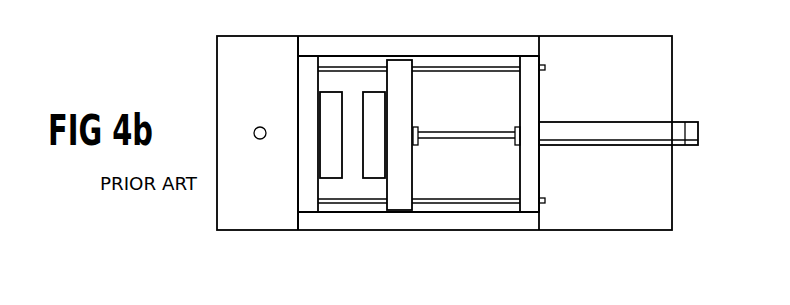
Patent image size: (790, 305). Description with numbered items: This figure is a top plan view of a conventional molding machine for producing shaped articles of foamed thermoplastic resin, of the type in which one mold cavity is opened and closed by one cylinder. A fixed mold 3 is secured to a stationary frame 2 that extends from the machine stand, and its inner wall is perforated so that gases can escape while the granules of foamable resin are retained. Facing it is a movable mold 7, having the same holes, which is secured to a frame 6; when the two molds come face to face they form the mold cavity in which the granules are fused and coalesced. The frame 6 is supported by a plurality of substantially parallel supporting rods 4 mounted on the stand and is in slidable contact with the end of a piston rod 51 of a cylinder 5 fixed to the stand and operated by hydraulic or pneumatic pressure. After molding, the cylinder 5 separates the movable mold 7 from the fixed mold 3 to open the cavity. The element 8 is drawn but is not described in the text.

The stationary frame 2 is at (310, 203).
The fixed mold 3 is at (328, 100).
The supporting rods 4 is at (500, 200).
The cylinder 5 is at (693, 128).
The frame 6 is at (398, 65).
The movable mold 7 is at (373, 100).
The guide frame 8 is at (393, 224).
The piston rod 51 is at (472, 133).